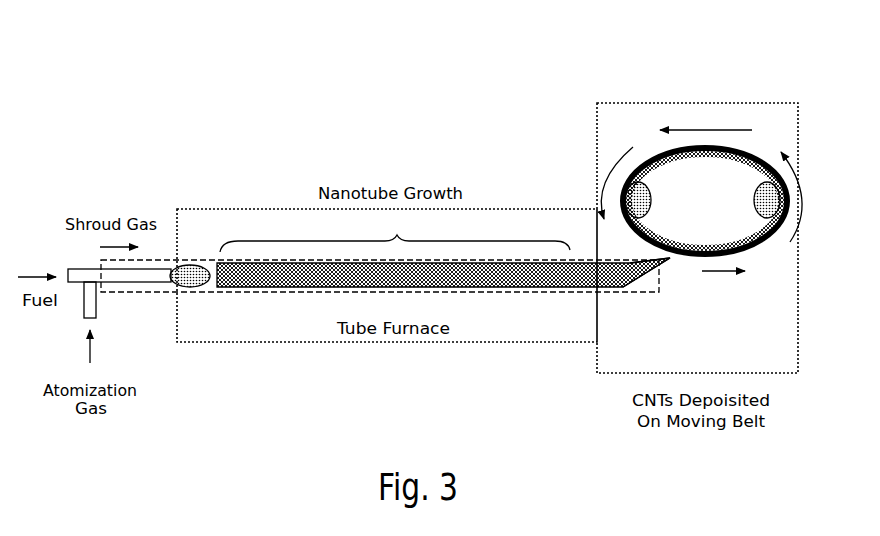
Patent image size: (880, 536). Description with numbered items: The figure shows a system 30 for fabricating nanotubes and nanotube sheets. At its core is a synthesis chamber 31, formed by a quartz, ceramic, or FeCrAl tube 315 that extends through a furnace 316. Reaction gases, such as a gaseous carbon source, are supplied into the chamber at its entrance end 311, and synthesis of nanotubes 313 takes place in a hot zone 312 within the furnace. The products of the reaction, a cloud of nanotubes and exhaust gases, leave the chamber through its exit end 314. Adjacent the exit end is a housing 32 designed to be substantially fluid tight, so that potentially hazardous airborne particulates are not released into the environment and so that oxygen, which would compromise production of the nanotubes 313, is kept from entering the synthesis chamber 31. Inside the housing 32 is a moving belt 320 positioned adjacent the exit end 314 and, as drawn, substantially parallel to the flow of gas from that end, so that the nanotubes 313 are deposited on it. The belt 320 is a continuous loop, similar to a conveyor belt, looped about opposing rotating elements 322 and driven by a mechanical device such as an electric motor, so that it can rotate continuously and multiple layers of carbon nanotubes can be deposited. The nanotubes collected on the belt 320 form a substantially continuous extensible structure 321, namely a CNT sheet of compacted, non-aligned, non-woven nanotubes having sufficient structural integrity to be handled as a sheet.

The system 30 is at (410, 146).
The synthesis chamber 31 is at (190, 262).
The entrance end 311 is at (97, 294).
The hot zone 312 is at (395, 232).
The nanotubes 313 is at (670, 260).
The exit end 314 is at (645, 292).
The tube 315 is at (293, 292).
The furnace 316 is at (465, 342).
The housing 32 is at (718, 102).
The moving belt 320 is at (747, 250).
The extensible structure 321 is at (652, 153).
The rotating elements 322 is at (755, 196).